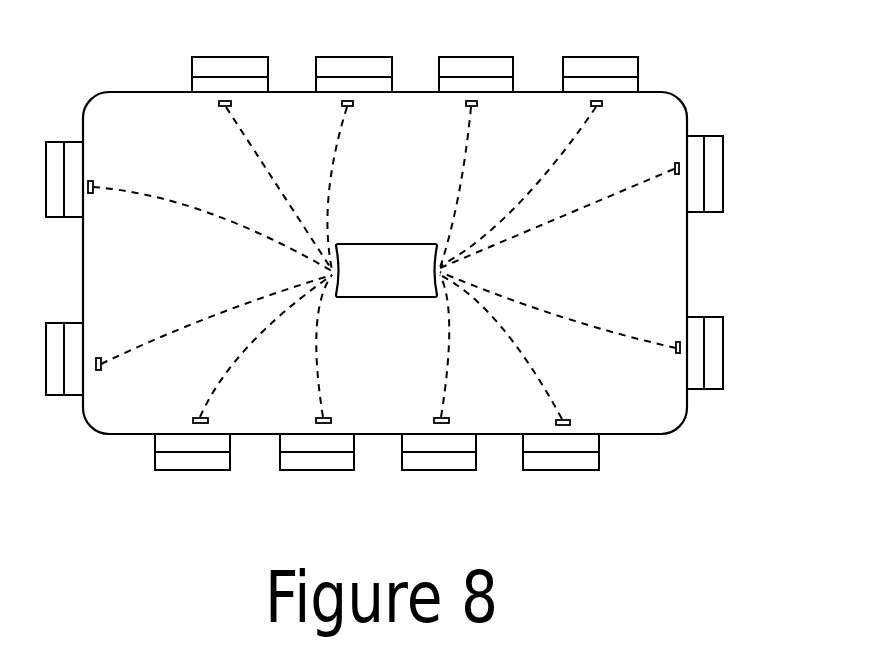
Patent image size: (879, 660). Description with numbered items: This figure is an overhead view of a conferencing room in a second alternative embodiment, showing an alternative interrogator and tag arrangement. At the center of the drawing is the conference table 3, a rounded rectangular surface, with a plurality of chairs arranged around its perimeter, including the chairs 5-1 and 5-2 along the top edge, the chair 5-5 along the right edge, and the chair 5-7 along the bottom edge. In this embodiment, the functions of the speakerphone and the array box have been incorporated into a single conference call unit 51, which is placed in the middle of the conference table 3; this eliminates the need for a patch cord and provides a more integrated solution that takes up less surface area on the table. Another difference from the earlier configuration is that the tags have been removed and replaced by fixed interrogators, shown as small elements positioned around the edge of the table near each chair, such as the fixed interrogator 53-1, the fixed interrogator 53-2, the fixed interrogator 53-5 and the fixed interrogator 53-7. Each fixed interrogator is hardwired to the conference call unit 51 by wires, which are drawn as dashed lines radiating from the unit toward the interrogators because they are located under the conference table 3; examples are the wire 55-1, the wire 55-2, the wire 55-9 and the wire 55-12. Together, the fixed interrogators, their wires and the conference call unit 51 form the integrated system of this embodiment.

The conference table 3 is at (626, 272).
The chair 5-1 is at (218, 56).
The chair 5-2 is at (351, 56).
The chair 5-5 is at (724, 170).
The chair 5-7 is at (556, 470).
The conference call unit 51 is at (386, 285).
The fixed interrogator 53-1 is at (222, 106).
The fixed interrogator 53-2 is at (352, 107).
The fixed interrogator 53-5 is at (672, 167).
The fixed interrogator 53-7 is at (566, 418).
The wire 55-1 is at (250, 150).
The wire 55-2 is at (336, 165).
The wire 55-9 is at (316, 362).
The wire 55-12 is at (202, 222).